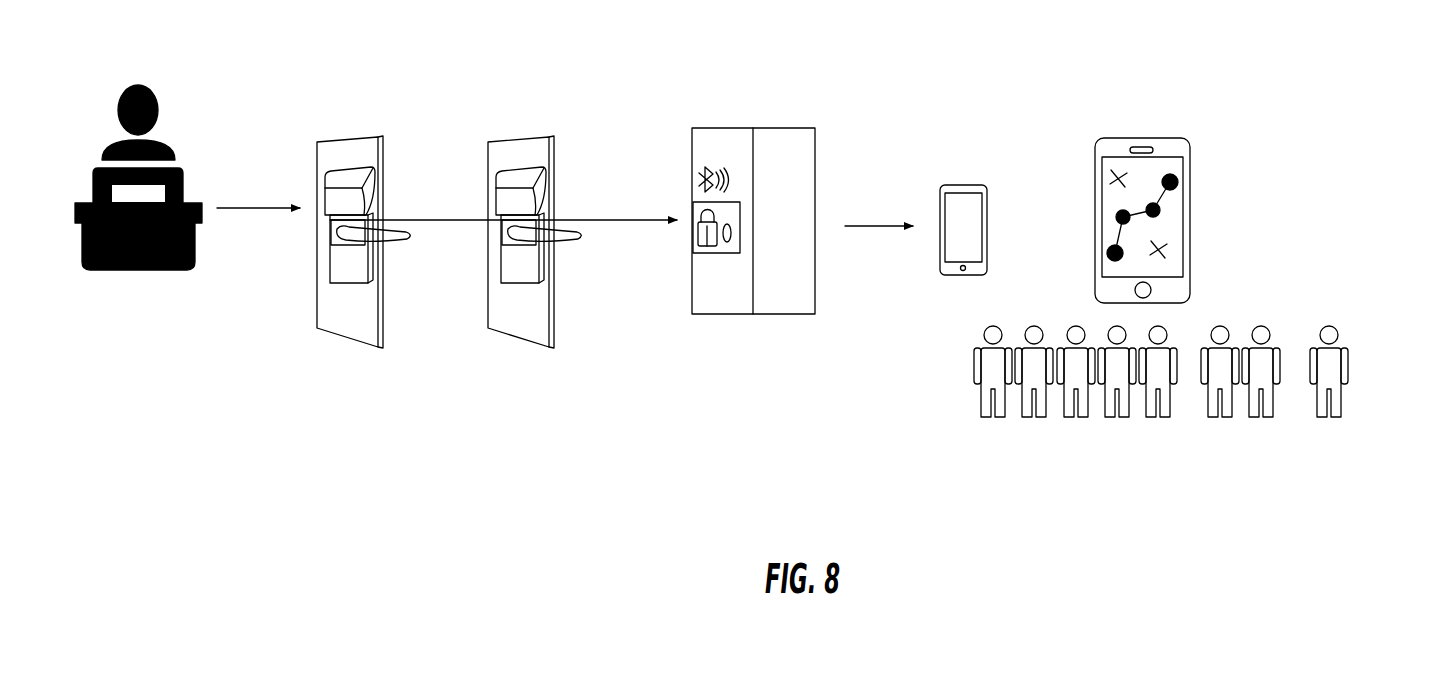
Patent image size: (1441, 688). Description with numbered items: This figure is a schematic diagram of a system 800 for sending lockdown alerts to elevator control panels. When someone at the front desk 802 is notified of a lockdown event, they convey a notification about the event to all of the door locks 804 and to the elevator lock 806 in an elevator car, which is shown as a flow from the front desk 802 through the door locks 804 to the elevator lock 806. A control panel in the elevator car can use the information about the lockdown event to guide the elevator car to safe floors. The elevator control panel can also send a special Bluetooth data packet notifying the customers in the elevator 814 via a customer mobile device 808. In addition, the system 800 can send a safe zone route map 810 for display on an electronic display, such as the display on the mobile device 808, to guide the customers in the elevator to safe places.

The system 800 is at (1407, 131).
The front desk 802 is at (142, 320).
The door locks 804 is at (437, 400).
The elevator lock 806 is at (747, 363).
The customer mobile device 808 is at (960, 143).
The safe zone route map 810 is at (1268, 182).
The customers in elevator 814 is at (1150, 455).